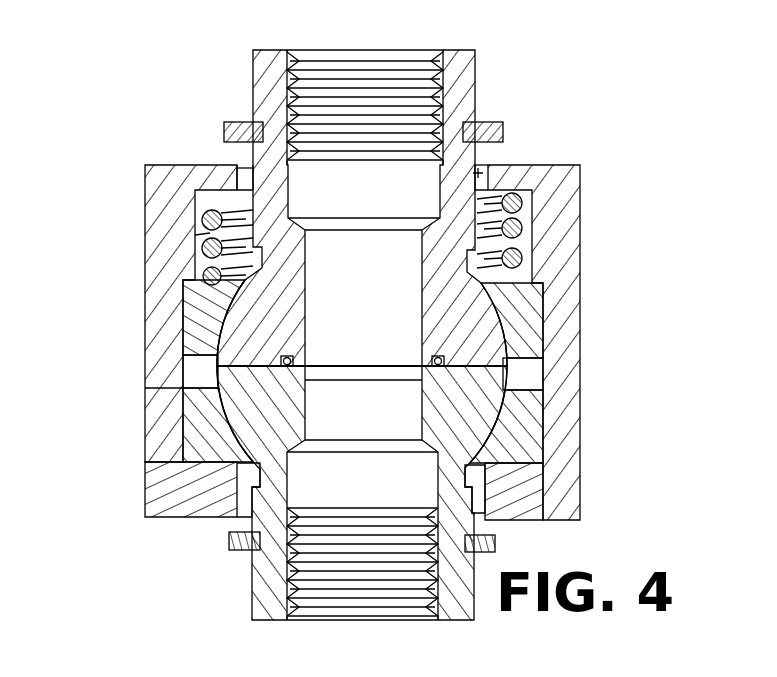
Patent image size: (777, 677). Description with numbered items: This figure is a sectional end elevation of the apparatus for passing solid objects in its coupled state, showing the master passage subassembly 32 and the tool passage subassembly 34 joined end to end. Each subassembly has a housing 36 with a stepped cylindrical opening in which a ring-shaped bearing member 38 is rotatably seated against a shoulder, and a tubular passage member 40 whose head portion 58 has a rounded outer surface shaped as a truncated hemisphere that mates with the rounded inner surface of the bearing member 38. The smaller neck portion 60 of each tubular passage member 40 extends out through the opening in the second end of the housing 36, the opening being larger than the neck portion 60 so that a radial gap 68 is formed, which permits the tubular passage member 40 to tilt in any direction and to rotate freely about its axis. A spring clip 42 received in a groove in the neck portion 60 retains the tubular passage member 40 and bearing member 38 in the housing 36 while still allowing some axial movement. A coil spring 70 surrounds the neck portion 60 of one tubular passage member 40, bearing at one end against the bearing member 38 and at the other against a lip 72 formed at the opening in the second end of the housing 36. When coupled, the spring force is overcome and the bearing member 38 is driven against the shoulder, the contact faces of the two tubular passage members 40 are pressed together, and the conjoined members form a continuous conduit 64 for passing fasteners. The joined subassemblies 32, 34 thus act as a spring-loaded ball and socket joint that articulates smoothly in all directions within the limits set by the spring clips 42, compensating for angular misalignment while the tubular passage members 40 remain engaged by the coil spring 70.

The master passage subassembly 32 is at (128, 275).
The tool passage subassembly 34 is at (128, 490).
The housing 36 is at (582, 190).
The bearing member 38 is at (540, 356).
The tubular passage member 40 is at (460, 240).
The spring clip 42 is at (495, 122).
The head portion 58 is at (500, 300).
The neck portion 60 is at (478, 60).
The conduit 64 is at (413, 55).
The radial gap 68 is at (480, 165).
The coil spring 70 is at (197, 203).
The lip 72 is at (218, 190).